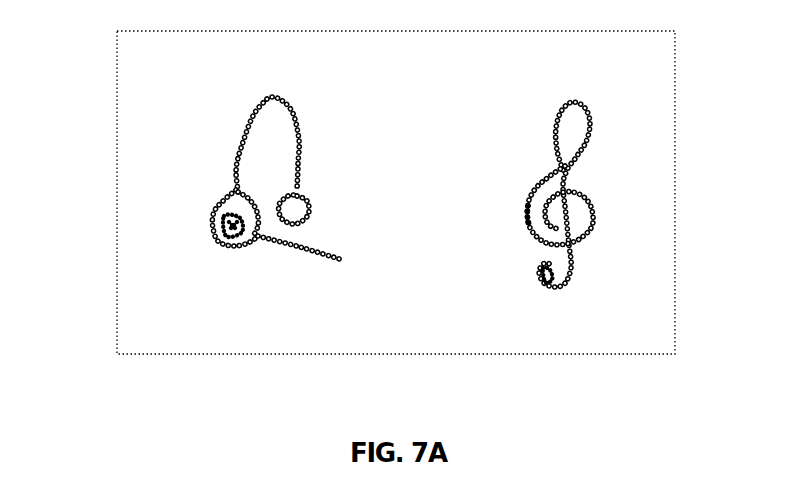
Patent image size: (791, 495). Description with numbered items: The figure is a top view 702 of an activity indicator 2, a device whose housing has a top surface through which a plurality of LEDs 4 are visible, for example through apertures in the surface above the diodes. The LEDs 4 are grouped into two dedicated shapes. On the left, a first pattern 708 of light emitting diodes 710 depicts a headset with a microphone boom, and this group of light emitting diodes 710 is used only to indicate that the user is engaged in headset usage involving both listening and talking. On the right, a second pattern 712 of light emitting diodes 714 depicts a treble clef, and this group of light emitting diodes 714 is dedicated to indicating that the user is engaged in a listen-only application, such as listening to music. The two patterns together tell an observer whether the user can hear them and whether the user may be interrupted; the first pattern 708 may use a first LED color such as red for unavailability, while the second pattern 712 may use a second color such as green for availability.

The activity indicator 2 is at (79, 105).
The LEDs 4 is at (370, 169).
The top view 702 is at (680, 197).
The first pattern 708 is at (222, 171).
The light emitting diodes 710 is at (222, 231).
The second pattern 712 is at (528, 180).
The light emitting diodes 714 is at (532, 226).